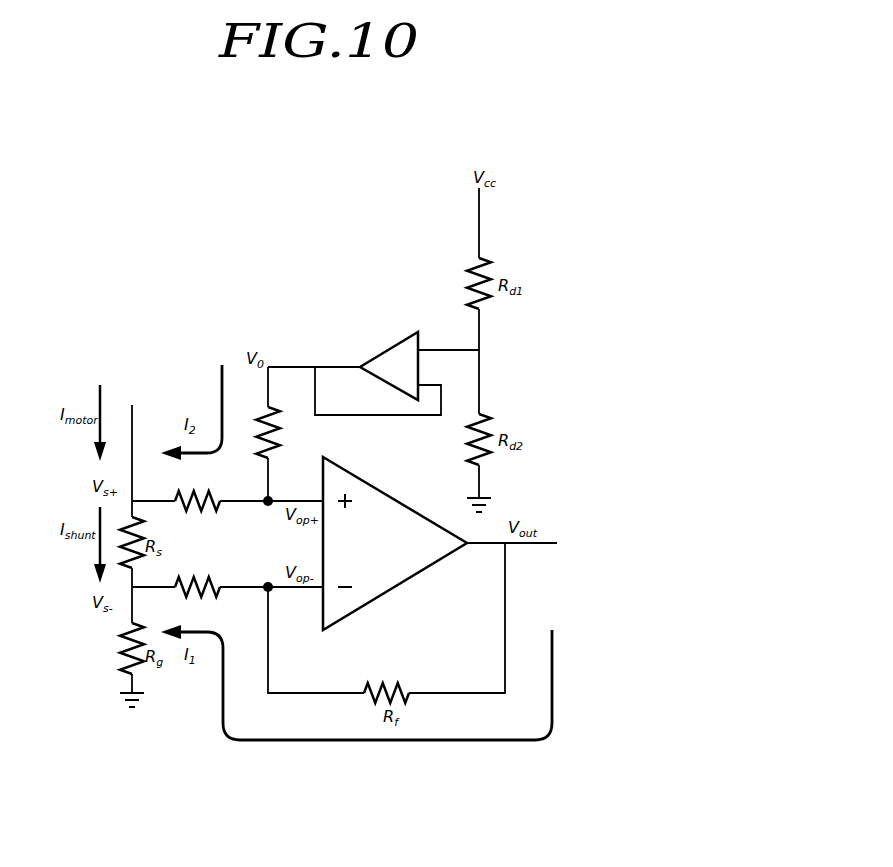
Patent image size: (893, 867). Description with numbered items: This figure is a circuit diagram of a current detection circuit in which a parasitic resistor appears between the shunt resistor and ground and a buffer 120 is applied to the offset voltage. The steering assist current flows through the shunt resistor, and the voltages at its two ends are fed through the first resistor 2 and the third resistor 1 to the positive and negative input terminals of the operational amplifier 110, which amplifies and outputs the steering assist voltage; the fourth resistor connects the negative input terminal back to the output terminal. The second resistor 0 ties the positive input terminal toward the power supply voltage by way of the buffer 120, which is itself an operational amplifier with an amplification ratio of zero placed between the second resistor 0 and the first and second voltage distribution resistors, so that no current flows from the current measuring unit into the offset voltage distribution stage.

The operational amplifier 110 is at (395, 499).
The buffer 120 is at (390, 349).
The resistor R0 0 is at (279, 432).
The resistor R1 1 is at (197, 600).
The resistor R2 2 is at (197, 486).